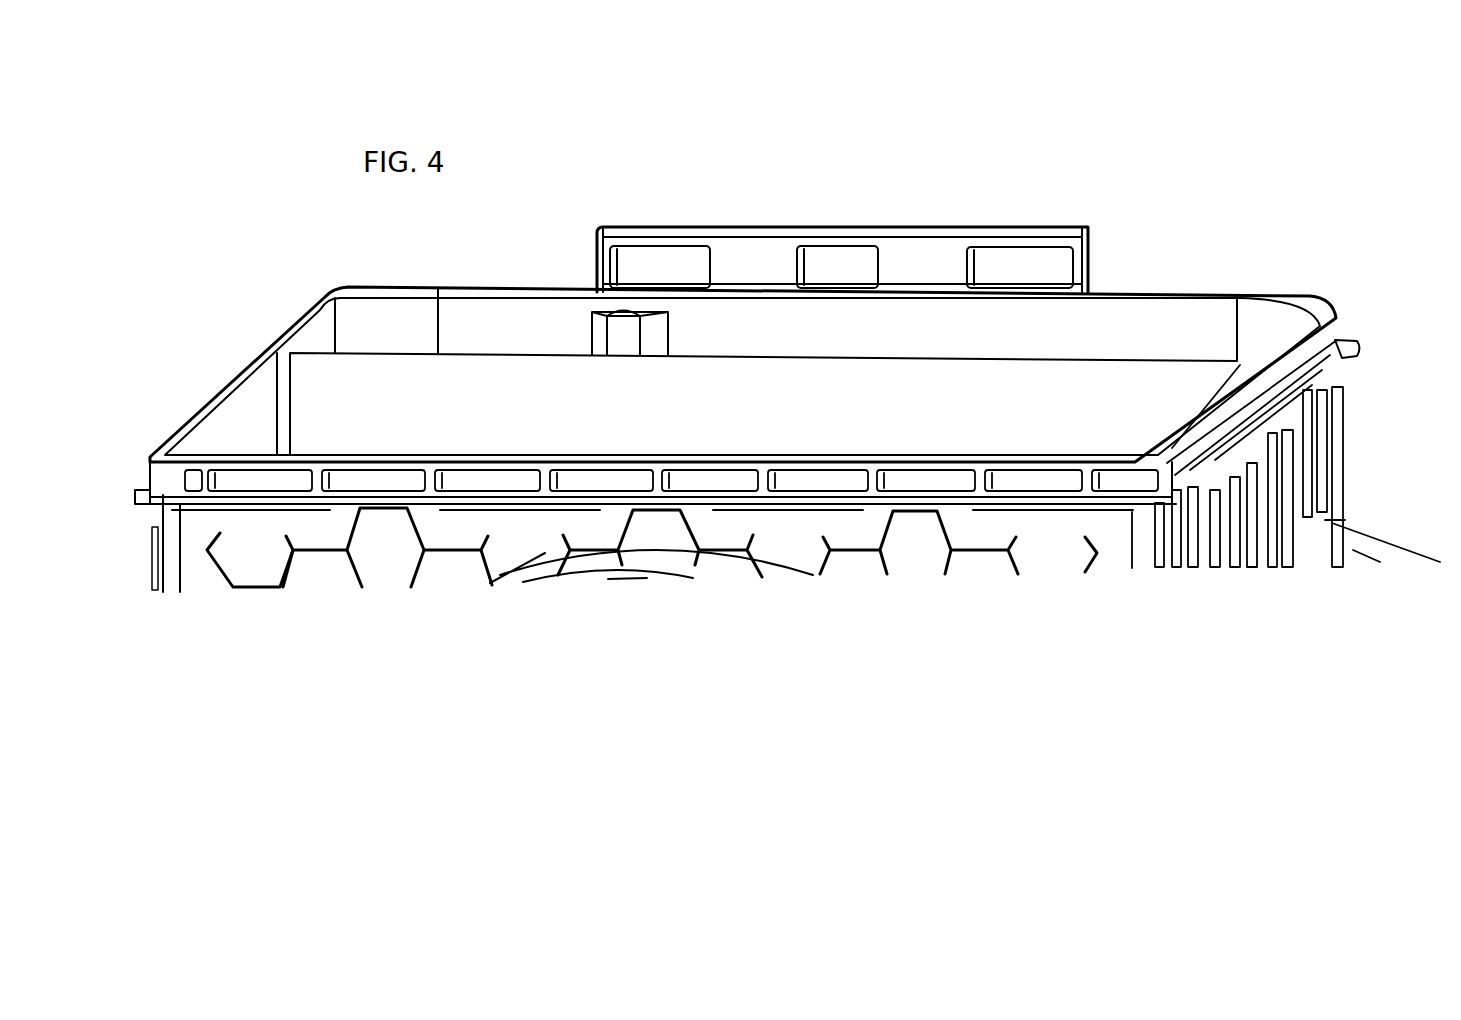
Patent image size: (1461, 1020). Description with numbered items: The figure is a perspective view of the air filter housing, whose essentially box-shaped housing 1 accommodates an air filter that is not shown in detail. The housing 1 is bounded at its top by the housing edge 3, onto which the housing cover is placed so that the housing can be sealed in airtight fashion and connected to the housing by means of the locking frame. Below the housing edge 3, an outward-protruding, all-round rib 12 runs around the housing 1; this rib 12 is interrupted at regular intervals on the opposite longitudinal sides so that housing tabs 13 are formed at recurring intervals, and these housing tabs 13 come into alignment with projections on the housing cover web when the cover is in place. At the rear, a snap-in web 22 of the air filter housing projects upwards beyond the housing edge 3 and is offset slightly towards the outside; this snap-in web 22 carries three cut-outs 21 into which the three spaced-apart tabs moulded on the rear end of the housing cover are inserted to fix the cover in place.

The housing 1 is at (1350, 292).
The housing edge 3 is at (1337, 327).
The rib 12 is at (1172, 505).
The housing tabs 13 is at (1340, 451).
The cut-outs 21 is at (1020, 277).
The snap-in web 22 is at (1092, 244).